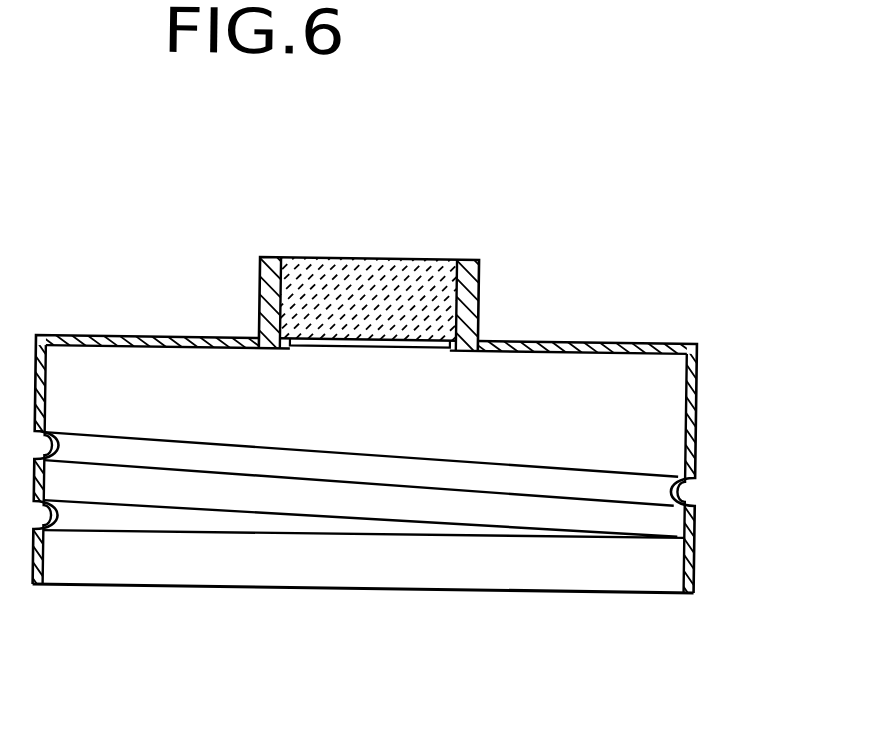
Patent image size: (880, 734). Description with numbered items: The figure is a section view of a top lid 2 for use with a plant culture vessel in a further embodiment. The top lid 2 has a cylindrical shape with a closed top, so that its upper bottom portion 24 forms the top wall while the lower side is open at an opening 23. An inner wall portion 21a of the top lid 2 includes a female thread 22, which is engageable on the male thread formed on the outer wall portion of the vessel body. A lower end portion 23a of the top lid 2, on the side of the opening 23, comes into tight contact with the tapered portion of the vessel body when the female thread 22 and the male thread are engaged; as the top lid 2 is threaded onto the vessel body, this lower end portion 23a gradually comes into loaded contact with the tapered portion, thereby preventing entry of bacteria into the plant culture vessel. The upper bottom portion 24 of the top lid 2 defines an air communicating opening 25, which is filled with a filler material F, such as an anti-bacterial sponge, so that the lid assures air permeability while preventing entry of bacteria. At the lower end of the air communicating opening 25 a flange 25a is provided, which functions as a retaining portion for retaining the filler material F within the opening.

The top lid 2 is at (699, 307).
The female thread 22 is at (688, 386).
The upper bottom portion 24 is at (172, 345).
The inner wall portion 21a is at (672, 483).
The opening 23 is at (171, 560).
The lower end portion 23a is at (693, 588).
The air communicating opening 25 is at (398, 278).
The flange 25a is at (293, 337).
The filler material F is at (325, 273).